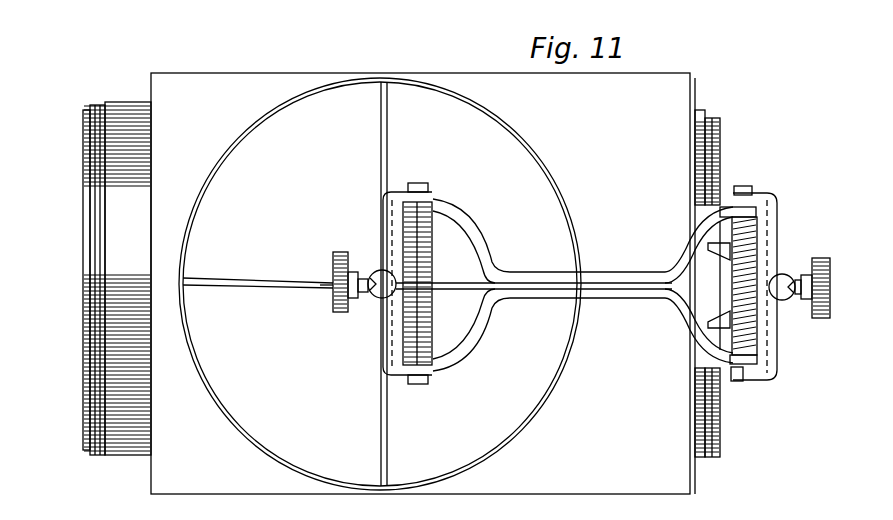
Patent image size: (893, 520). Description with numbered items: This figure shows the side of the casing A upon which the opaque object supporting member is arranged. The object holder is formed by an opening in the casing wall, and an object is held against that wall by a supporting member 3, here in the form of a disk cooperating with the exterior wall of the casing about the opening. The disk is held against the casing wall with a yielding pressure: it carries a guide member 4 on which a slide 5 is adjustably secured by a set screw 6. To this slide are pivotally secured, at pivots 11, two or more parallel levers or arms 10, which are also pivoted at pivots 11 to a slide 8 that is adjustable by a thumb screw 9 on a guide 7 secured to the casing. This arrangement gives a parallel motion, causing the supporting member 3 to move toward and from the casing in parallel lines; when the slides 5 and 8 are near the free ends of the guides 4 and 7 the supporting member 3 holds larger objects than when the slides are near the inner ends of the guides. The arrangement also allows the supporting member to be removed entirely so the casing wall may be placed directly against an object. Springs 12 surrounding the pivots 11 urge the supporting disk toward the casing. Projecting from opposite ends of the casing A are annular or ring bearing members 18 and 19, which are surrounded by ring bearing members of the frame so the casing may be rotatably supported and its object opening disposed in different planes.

The casing A is at (423, 283).
The supporting member 3 is at (425, 284).
The guide member 4 is at (382, 280).
The slide 5 is at (375, 297).
The set screw 6 is at (340, 312).
The guide 7 is at (783, 284).
The slide 8 is at (790, 302).
The thumb screw 9 is at (821, 318).
The parallel levers or arms 10 is at (627, 300).
The pivots 11 is at (414, 329).
The springs 12 is at (750, 237).
The ring bearing member 18 is at (86, 418).
The ring bearing member 19 is at (720, 428).